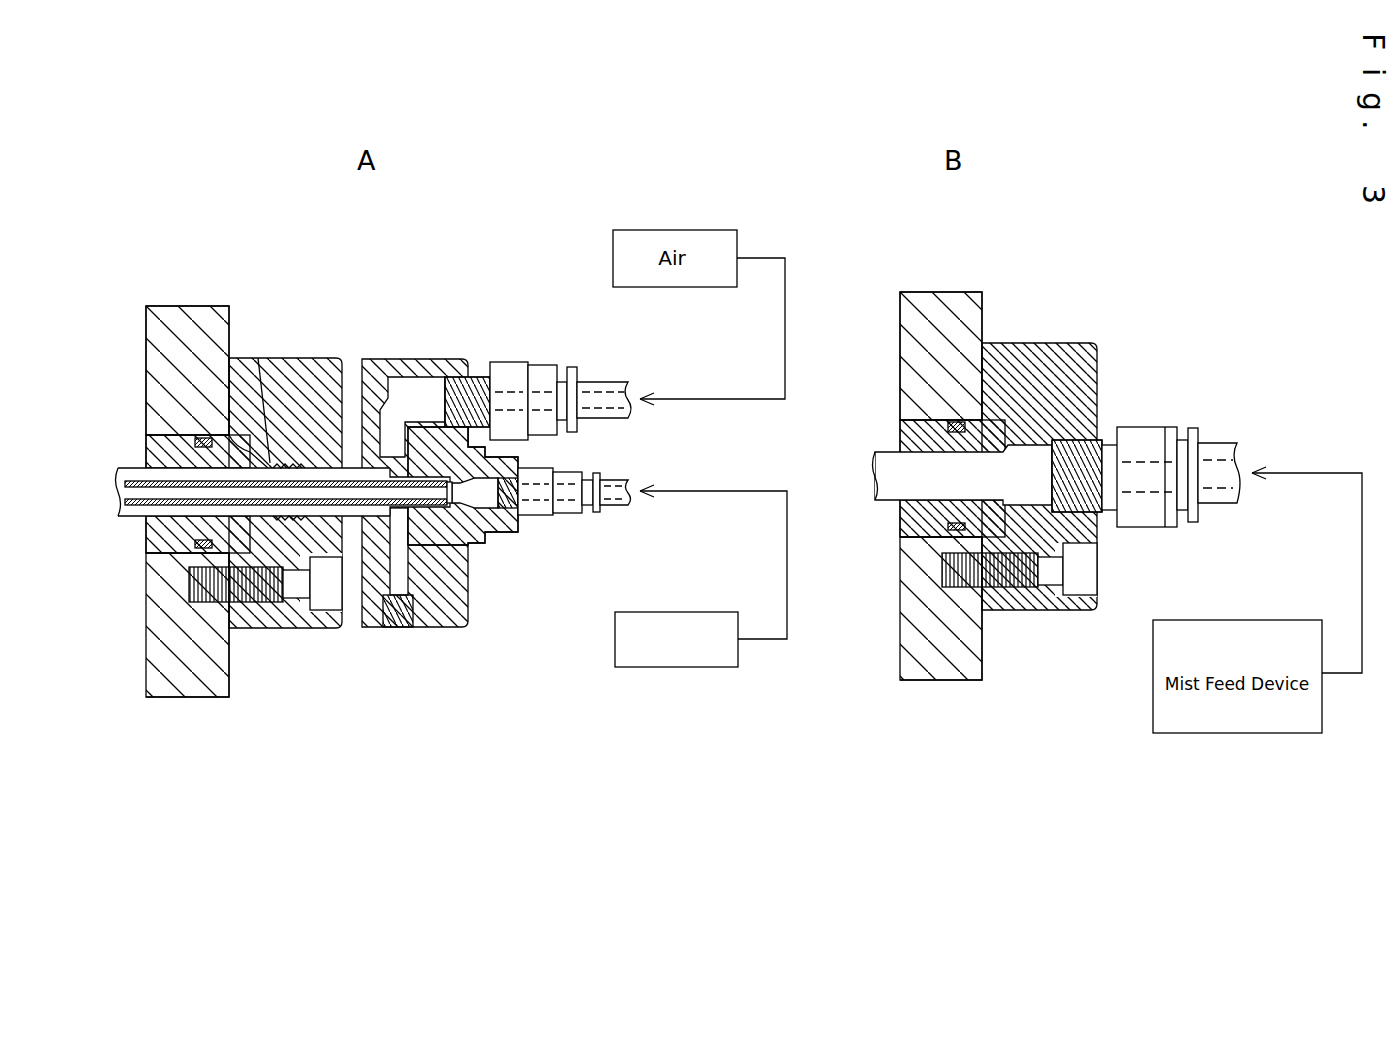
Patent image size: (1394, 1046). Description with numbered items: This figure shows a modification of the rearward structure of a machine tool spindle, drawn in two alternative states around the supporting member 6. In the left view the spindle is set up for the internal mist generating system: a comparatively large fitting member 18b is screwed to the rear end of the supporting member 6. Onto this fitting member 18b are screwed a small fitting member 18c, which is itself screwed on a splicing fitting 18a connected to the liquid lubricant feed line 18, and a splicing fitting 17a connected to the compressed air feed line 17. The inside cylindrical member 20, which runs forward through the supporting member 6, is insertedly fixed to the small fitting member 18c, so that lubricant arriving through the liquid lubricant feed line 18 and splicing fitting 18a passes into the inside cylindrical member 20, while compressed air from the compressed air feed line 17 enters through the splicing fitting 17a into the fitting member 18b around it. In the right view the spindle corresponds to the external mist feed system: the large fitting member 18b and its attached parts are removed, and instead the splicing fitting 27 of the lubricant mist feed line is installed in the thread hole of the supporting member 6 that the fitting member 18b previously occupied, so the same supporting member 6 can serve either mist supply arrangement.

The supporting member 6 is at (298, 357).
The compressed air feed line 17 is at (1042, 452).
The splicing fitting 17a is at (548, 362).
The liquid lubricant feed line 18 is at (748, 489).
The splicing fitting 18a is at (572, 517).
The fitting member 18b is at (400, 357).
The small fitting member 18c is at (497, 540).
The inside cylindrical member 20 is at (130, 522).
The splicing fitting 27 is at (1145, 427).